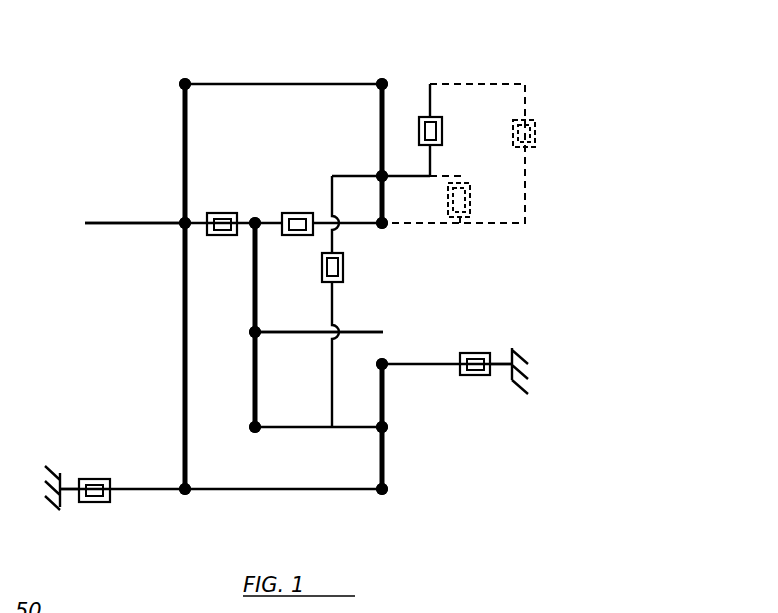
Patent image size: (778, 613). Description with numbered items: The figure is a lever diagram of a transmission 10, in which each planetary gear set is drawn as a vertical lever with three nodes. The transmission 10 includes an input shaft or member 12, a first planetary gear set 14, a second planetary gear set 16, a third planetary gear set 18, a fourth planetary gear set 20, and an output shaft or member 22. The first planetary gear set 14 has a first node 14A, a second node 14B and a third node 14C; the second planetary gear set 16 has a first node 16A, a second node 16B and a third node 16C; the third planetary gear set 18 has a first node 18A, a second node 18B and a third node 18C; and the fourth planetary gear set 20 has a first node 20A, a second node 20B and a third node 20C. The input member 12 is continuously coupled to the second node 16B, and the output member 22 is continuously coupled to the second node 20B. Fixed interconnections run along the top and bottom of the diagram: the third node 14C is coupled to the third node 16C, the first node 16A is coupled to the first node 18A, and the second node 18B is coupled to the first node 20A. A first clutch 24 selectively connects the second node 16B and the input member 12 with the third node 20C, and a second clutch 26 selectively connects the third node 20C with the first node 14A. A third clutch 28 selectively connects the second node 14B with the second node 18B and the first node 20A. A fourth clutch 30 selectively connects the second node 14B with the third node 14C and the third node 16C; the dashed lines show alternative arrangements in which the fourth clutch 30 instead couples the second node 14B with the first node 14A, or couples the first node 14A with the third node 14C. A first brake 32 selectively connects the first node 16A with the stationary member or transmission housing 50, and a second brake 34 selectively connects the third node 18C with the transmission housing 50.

The transmission 10 is at (595, 72).
The input shaft or member 12 is at (92, 228).
The first planetary gear set 14 is at (386, 58).
The first node of the first planetary gear set 14A is at (383, 229).
The second node of the first planetary gear set 14B is at (379, 172).
The third node of the first planetary gear set 14C is at (380, 80).
The second planetary gear set 16 is at (190, 58).
The first node of the second planetary gear set 16A is at (184, 496).
The second node of the second planetary gear set 16B is at (180, 226).
The third node of the second planetary gear set 16C is at (183, 80).
The third planetary gear set 18 is at (407, 476).
The first node of the third planetary gear set 18A is at (384, 496).
The second node of the third planetary gear set 18B is at (387, 430).
The third node of the third planetary gear set 18C is at (378, 367).
The fourth planetary gear set 20 is at (270, 185).
The first node of the fourth planetary gear set 20A is at (254, 433).
The second node of the fourth planetary gear set 20B is at (254, 336).
The third node of the fourth planetary gear set 20C is at (253, 218).
The output shaft or member 22 is at (357, 332).
The first clutch 24 is at (226, 238).
The second clutch 26 is at (298, 238).
The third clutch 28 is at (346, 258).
The fourth clutch 30 is at (444, 136).
The first brake 32 is at (98, 477).
The second brake 34 is at (470, 351).
The stationary member or transmission housing 50 is at (57, 470).